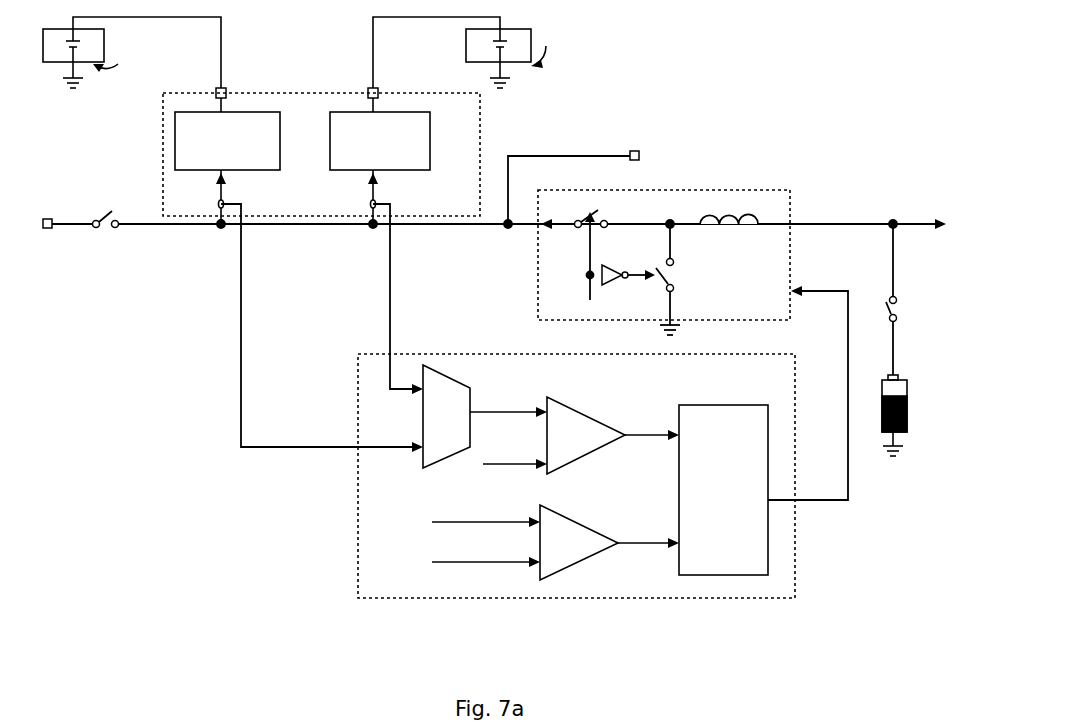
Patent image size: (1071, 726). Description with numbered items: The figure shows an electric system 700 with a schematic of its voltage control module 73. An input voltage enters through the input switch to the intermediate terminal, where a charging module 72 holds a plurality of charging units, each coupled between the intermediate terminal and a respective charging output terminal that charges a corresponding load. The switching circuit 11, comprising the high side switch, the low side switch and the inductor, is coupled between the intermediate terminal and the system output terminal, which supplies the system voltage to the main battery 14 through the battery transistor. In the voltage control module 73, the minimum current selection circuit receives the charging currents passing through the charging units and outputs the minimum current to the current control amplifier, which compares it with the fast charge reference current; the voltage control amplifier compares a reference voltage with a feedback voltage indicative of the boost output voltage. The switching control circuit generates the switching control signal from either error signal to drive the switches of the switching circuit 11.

The electric system 700 is at (832, 114).
The charging module 72 is at (482, 148).
The switching circuit 11 is at (795, 207).
The main battery 14 is at (878, 396).
The voltage control module 73 is at (735, 606).